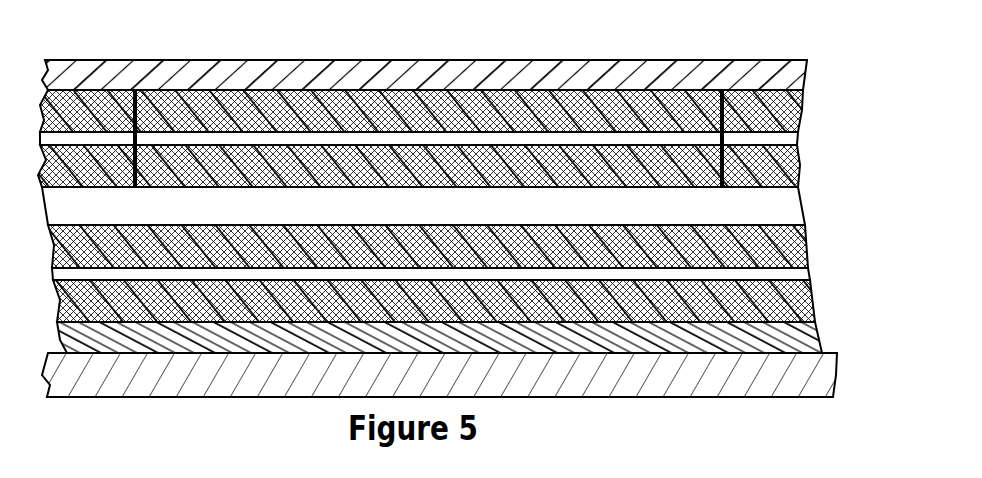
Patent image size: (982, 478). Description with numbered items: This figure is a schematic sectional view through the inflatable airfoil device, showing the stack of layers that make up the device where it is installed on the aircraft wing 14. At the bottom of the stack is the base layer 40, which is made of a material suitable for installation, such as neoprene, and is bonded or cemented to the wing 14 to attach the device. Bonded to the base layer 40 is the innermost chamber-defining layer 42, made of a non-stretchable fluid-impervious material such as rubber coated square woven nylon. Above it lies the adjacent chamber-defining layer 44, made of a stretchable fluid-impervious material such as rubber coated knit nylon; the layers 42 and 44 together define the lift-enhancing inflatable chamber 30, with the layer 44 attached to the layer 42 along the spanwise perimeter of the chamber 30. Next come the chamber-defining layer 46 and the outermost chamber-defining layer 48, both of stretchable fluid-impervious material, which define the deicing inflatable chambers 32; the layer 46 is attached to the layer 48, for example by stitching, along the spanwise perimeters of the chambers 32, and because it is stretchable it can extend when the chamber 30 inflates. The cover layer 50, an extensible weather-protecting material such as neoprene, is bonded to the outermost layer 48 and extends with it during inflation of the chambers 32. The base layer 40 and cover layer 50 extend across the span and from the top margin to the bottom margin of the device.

The wing 14 is at (808, 363).
The inflatable chamber 30 is at (800, 272).
The inflatable chambers 32 is at (787, 137).
The base layer 40 is at (807, 333).
The innermost chamber-defining layer 42 is at (805, 295).
The chamber-defining layer 44 is at (807, 243).
The chamber-defining layer 46 is at (782, 172).
The outermost chamber-defining layer 48 is at (795, 110).
The cover layer 50 is at (792, 68).